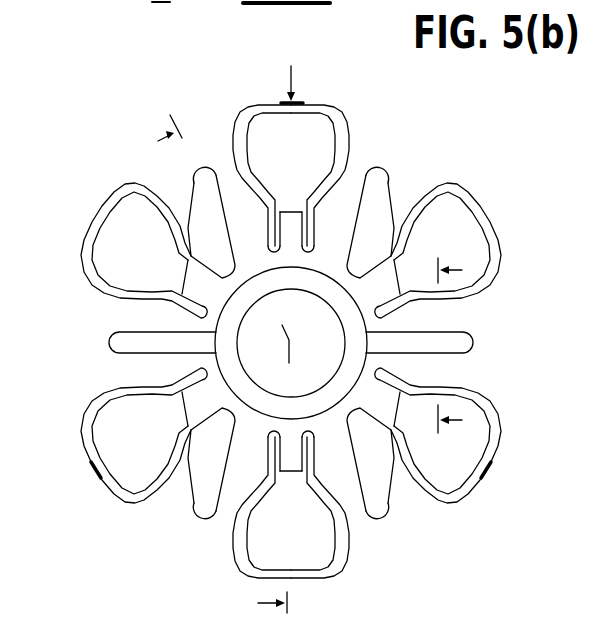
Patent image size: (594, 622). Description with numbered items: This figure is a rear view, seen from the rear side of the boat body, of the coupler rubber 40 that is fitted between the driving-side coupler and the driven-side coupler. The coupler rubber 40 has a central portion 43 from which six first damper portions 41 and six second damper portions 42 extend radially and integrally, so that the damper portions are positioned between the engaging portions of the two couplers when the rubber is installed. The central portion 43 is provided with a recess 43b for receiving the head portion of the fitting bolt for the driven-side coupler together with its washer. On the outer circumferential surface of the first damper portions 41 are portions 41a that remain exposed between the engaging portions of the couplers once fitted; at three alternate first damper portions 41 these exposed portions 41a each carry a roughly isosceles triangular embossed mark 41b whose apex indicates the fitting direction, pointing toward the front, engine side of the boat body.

The coupler rubber 40 is at (428, 134).
The first damper portion 41 is at (502, 250).
The exposed portion of outer circumferential surface 41a is at (318, 103).
The mark 41b is at (283, 102).
The second damper portion 42 is at (478, 342).
The central portion 43 is at (347, 407).
The recess 43b is at (272, 385).